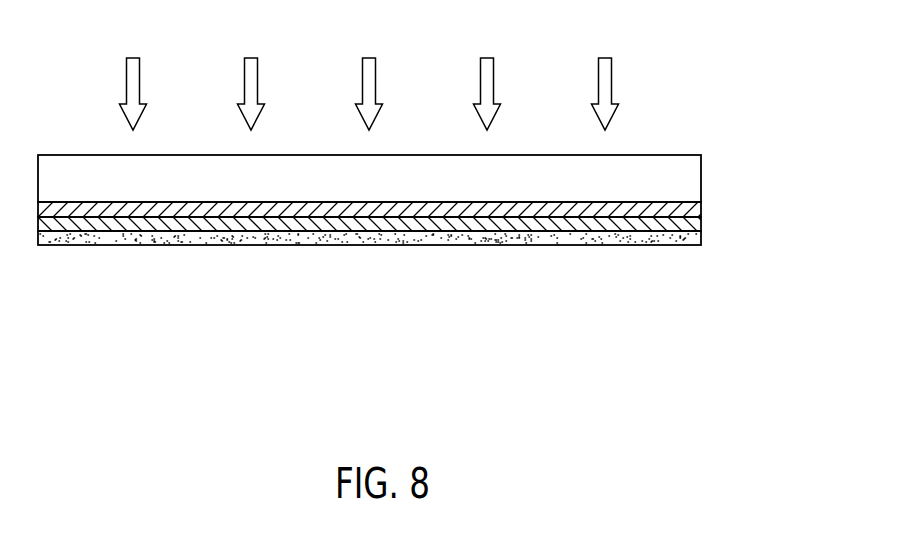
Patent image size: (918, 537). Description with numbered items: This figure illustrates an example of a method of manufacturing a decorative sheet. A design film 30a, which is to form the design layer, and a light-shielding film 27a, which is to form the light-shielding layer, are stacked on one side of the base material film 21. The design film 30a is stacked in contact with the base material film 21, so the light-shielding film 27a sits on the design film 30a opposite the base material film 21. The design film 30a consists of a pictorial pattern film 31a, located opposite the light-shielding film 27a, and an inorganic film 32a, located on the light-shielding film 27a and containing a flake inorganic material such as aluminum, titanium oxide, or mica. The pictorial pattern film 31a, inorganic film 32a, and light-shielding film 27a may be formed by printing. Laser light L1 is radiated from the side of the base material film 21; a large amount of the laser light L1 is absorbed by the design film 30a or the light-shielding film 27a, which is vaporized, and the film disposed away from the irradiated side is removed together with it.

The laser light L1 is at (369, 74).
The base material film 21 is at (702, 170).
The design film 30a is at (440, 221).
The pictorial pattern film 31a is at (702, 211).
The inorganic film 32a is at (702, 227).
The light-shielding film 27a is at (702, 246).